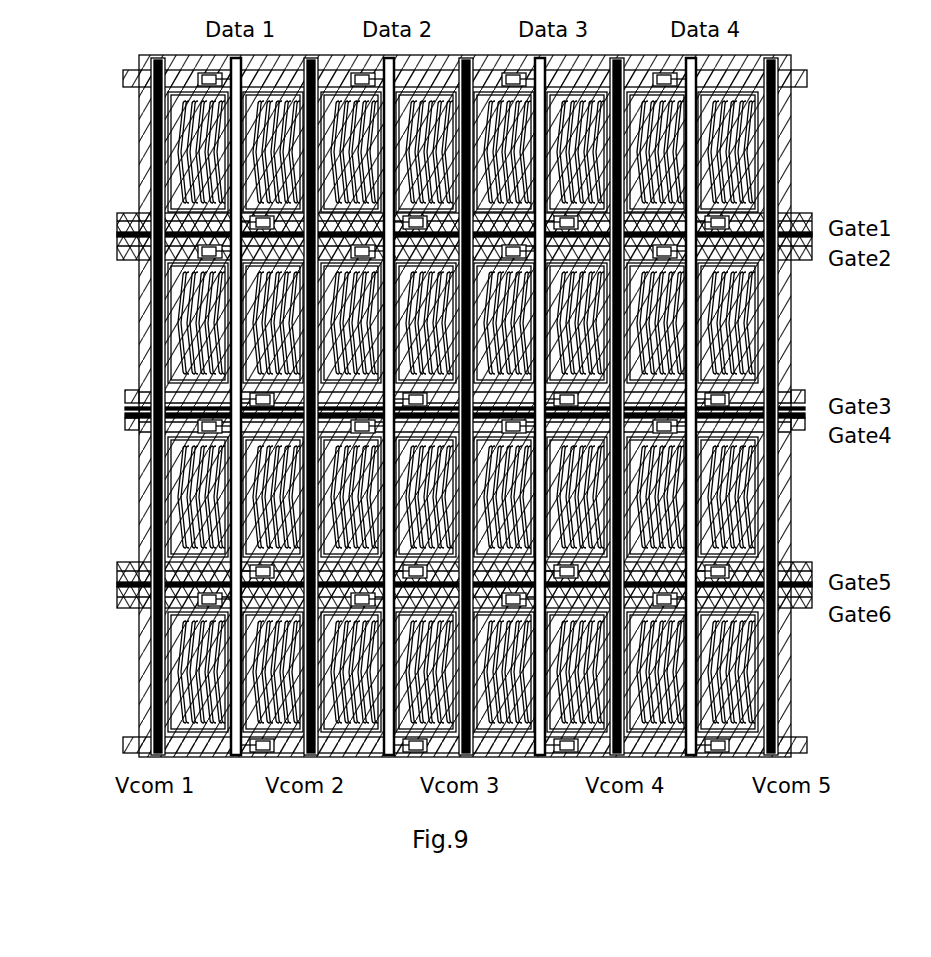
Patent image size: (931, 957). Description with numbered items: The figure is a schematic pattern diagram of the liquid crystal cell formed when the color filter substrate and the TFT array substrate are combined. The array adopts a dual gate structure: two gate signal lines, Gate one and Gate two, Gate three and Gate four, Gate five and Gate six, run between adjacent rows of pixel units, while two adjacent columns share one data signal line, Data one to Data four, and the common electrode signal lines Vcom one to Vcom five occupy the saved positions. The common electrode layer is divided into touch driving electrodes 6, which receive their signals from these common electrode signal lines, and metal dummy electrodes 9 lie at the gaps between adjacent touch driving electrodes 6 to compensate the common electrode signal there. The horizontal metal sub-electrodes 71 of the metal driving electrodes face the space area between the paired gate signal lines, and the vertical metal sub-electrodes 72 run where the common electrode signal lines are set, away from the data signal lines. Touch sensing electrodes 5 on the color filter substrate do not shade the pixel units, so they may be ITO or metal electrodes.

The touch sensing electrode 5 is at (127, 590).
The touch driving electrode 6 is at (150, 355).
The metal dummy electrode 9 is at (132, 410).
The horizontal metal sub-electrode 71 is at (118, 216).
The vertical metal sub-electrode 72 is at (783, 118).